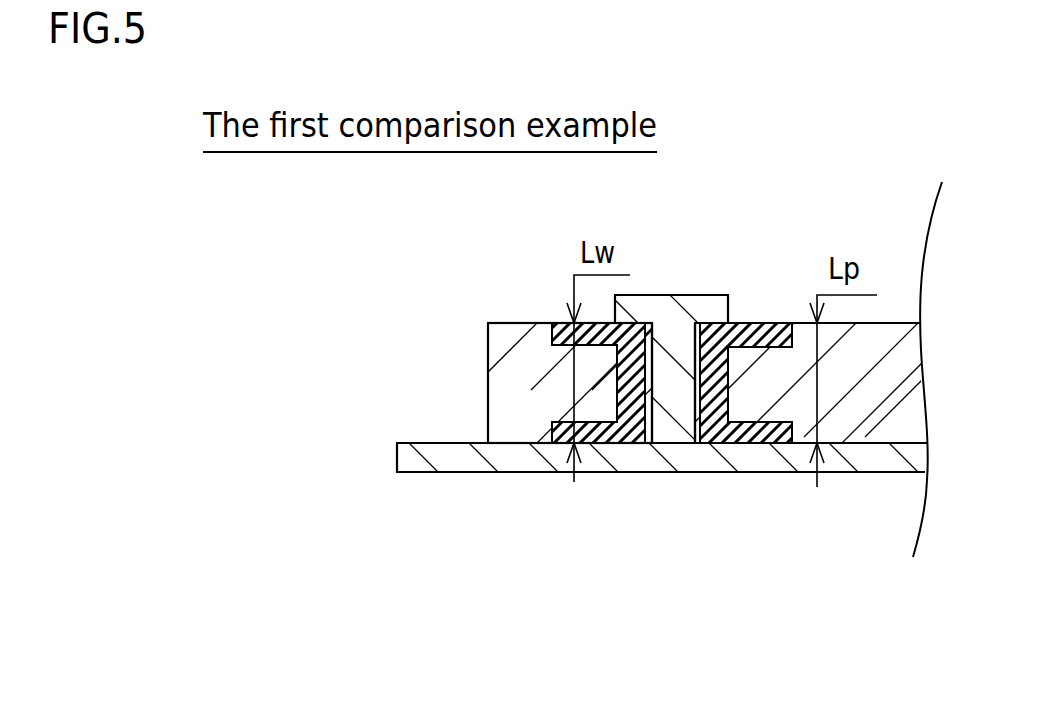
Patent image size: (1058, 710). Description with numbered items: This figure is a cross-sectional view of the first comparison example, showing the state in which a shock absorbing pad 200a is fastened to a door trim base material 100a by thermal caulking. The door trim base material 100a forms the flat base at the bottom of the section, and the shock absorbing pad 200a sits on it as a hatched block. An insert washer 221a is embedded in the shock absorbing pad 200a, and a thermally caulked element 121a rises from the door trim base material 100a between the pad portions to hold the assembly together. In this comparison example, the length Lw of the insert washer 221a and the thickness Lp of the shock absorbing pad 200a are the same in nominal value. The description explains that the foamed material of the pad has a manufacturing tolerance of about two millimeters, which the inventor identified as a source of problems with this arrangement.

The door trim base material 100a is at (397, 458).
The shock absorbing pad 200a is at (525, 323).
The connection terminal of first wiring board 121a is at (645, 295).
The insert washer 221a is at (742, 323).